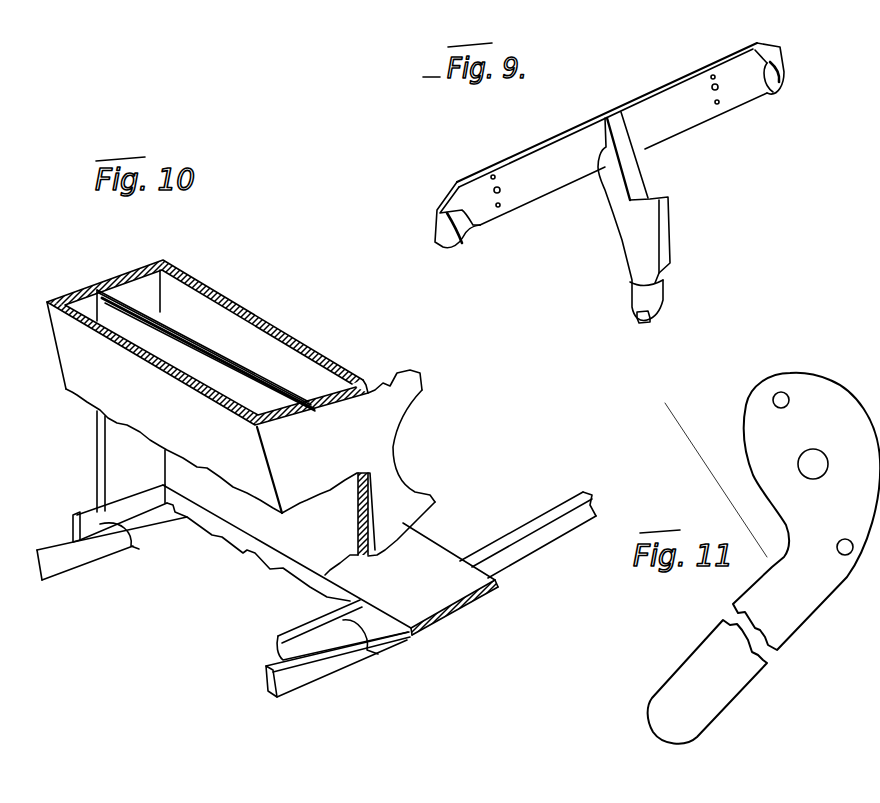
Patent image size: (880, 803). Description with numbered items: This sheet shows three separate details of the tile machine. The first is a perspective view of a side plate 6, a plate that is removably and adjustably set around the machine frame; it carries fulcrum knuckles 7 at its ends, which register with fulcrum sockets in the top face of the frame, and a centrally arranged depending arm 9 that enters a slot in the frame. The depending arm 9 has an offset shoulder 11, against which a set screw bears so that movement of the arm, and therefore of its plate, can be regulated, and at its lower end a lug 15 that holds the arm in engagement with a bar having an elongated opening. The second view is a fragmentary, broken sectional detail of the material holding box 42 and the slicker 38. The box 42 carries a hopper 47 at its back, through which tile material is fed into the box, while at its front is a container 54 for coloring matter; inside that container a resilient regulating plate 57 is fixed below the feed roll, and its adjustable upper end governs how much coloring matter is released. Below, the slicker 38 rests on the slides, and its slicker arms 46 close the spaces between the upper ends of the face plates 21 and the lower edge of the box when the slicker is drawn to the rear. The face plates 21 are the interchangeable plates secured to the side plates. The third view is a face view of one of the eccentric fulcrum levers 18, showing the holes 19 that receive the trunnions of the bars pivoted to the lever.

In FIG. 9, the side plate 6 is at (521, 151).
In FIG. 9, the fulcrum knuckle 7 is at (470, 230).
In FIG. 9, the depending arm 9 is at (617, 227).
In FIG. 9, the offset shoulder 11 is at (657, 183).
In FIG. 9, the lug 15 is at (643, 323).
In FIG. 10, the container for coloring matter 54 is at (72, 368).
In FIG. 10, the material holding box 42 is at (333, 357).
In FIG. 10, the resilient regulating plate 57 is at (183, 342).
In FIG. 10, the hopper 47 is at (405, 398).
In FIG. 10, the slicker 38 is at (417, 542).
In FIG. 10, the face plate 21 is at (77, 566).
In FIG. 10, the slicker arm 46 is at (256, 598).
In FIG. 11, the fulcrum lever 18 is at (767, 478).
In FIG. 11, the hole 19 is at (790, 392).